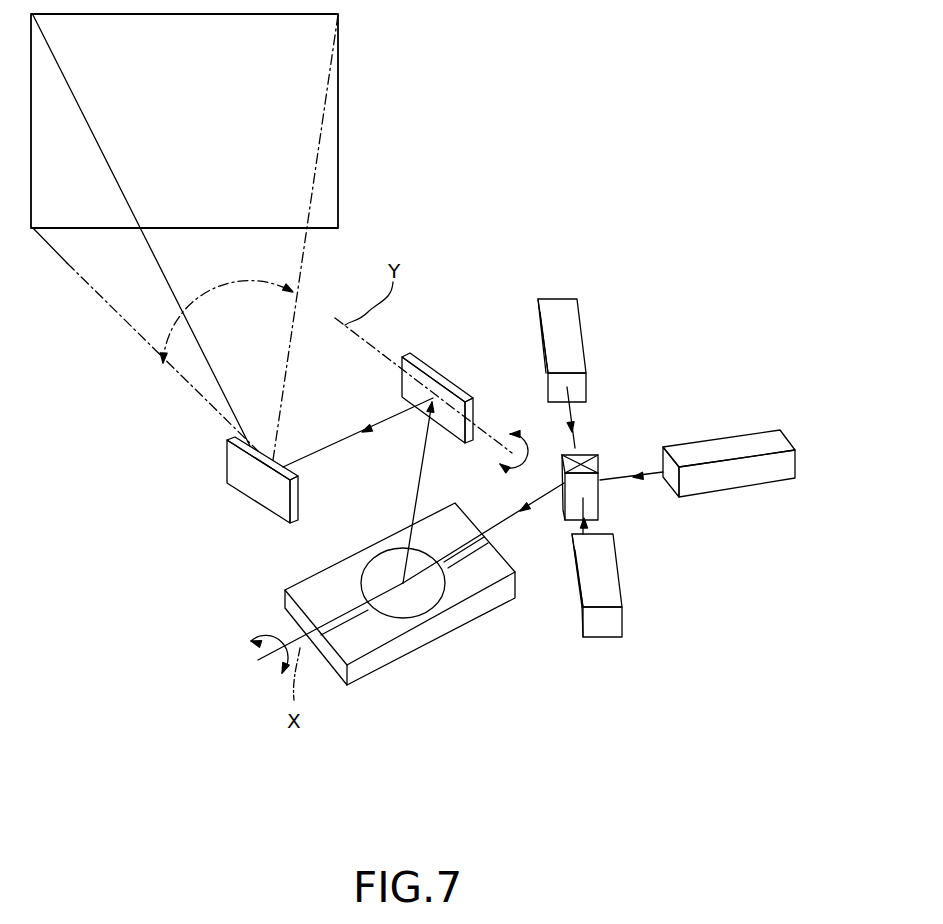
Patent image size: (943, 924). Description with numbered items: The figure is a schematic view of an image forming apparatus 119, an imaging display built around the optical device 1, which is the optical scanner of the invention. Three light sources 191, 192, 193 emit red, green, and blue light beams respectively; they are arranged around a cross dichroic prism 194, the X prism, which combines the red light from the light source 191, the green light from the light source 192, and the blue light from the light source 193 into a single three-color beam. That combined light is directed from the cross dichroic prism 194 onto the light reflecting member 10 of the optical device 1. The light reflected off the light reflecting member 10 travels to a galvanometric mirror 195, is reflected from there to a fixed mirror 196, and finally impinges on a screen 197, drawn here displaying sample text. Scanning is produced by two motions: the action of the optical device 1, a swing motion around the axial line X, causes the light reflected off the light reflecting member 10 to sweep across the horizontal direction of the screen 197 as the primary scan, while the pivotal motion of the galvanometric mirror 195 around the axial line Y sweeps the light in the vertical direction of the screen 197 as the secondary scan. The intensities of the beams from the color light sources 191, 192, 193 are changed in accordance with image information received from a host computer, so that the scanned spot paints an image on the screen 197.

The optical device 1 is at (448, 628).
The light reflecting member 10 is at (387, 588).
The image forming apparatus 119 is at (690, 217).
The light source 191 is at (570, 331).
The light source 192 is at (733, 447).
The light source 193 is at (603, 573).
The cross dichroic prism 194 is at (598, 462).
The galvanometric mirror 195 is at (427, 360).
The fixed mirror 196 is at (250, 485).
The screen 197 is at (341, 108).